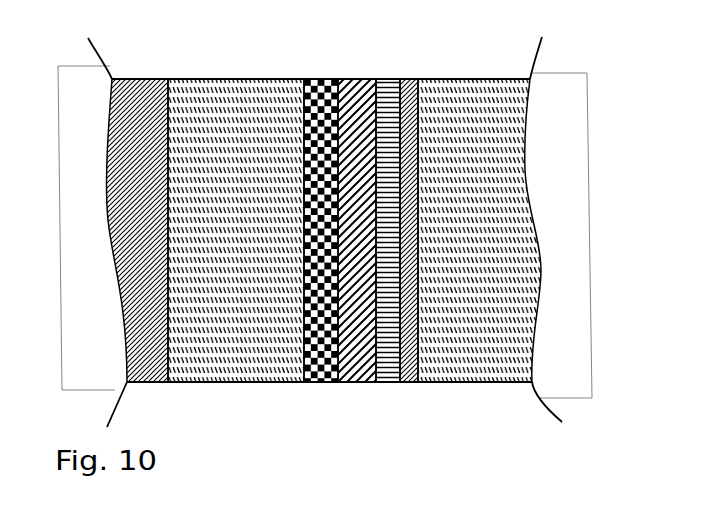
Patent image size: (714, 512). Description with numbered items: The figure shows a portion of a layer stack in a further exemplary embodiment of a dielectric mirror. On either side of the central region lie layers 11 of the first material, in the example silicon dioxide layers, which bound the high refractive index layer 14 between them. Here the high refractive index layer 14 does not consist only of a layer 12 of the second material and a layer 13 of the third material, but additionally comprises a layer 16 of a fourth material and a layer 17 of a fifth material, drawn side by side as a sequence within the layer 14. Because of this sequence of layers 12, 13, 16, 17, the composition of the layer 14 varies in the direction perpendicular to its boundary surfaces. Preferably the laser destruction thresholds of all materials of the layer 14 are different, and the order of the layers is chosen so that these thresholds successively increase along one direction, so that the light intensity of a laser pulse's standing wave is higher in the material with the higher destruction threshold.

The layer of the first material 11 is at (236, 91).
The layer of the second material 12 is at (310, 89).
The layer of the third material 13 is at (351, 88).
The high refractive index layer 14 is at (417, 387).
The layer of a fourth material 16 is at (388, 91).
The layer of a fifth material 17 is at (154, 100).